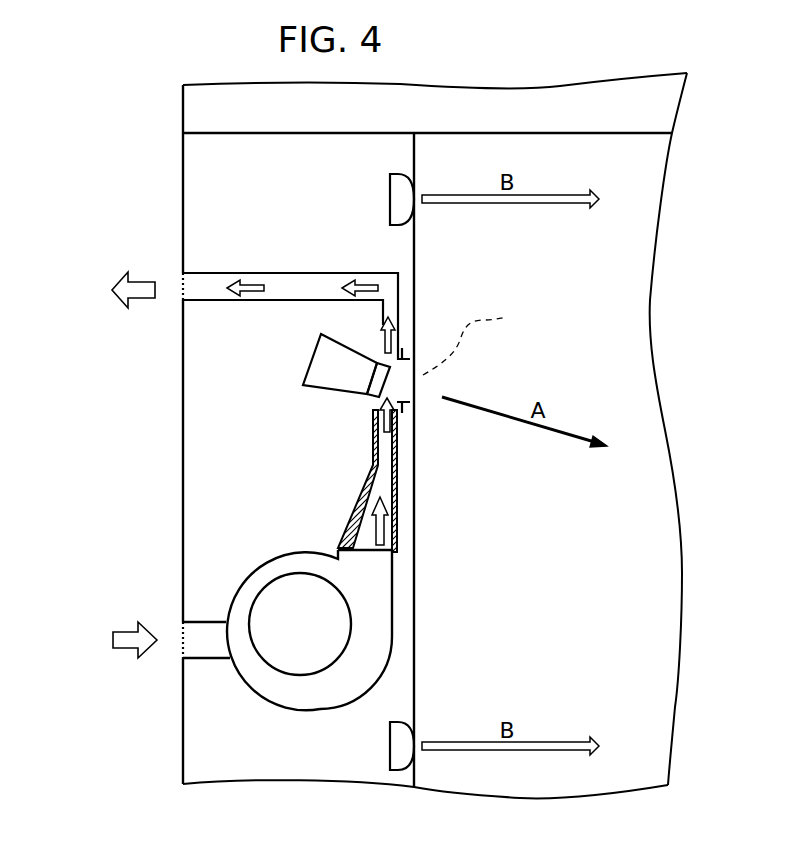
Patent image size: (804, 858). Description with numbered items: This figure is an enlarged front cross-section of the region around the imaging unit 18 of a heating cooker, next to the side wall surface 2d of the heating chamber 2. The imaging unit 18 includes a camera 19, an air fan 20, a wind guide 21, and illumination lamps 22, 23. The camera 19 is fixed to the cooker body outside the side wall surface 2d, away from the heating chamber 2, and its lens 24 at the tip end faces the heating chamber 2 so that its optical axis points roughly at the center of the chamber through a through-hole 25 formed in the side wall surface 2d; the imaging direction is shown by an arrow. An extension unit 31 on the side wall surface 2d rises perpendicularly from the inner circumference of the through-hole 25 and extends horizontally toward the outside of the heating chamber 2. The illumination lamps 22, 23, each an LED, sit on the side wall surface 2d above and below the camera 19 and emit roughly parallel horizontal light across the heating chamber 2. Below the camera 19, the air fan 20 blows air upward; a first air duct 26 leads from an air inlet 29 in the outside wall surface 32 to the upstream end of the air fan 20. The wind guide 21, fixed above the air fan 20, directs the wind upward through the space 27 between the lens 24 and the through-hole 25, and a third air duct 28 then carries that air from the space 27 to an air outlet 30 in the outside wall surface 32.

The heating chamber 2 is at (587, 585).
The side wall surface 2d is at (414, 671).
The imaging unit 18 is at (135, 372).
The camera 19 is at (303, 372).
The air fan 20 is at (277, 617).
The wind guide 21 is at (371, 457).
The illumination lamp 22 is at (393, 174).
The illumination lamp 23 is at (388, 742).
The lens 24 is at (372, 389).
The through-hole 25 is at (481, 340).
The first air duct 26 is at (203, 620).
The space 27 is at (400, 388).
The third air duct 28 is at (340, 273).
The air inlet 29 is at (182, 648).
The air outlet 30 is at (183, 284).
The extension unit 31 is at (405, 348).
The outside wall surface 32 is at (183, 183).